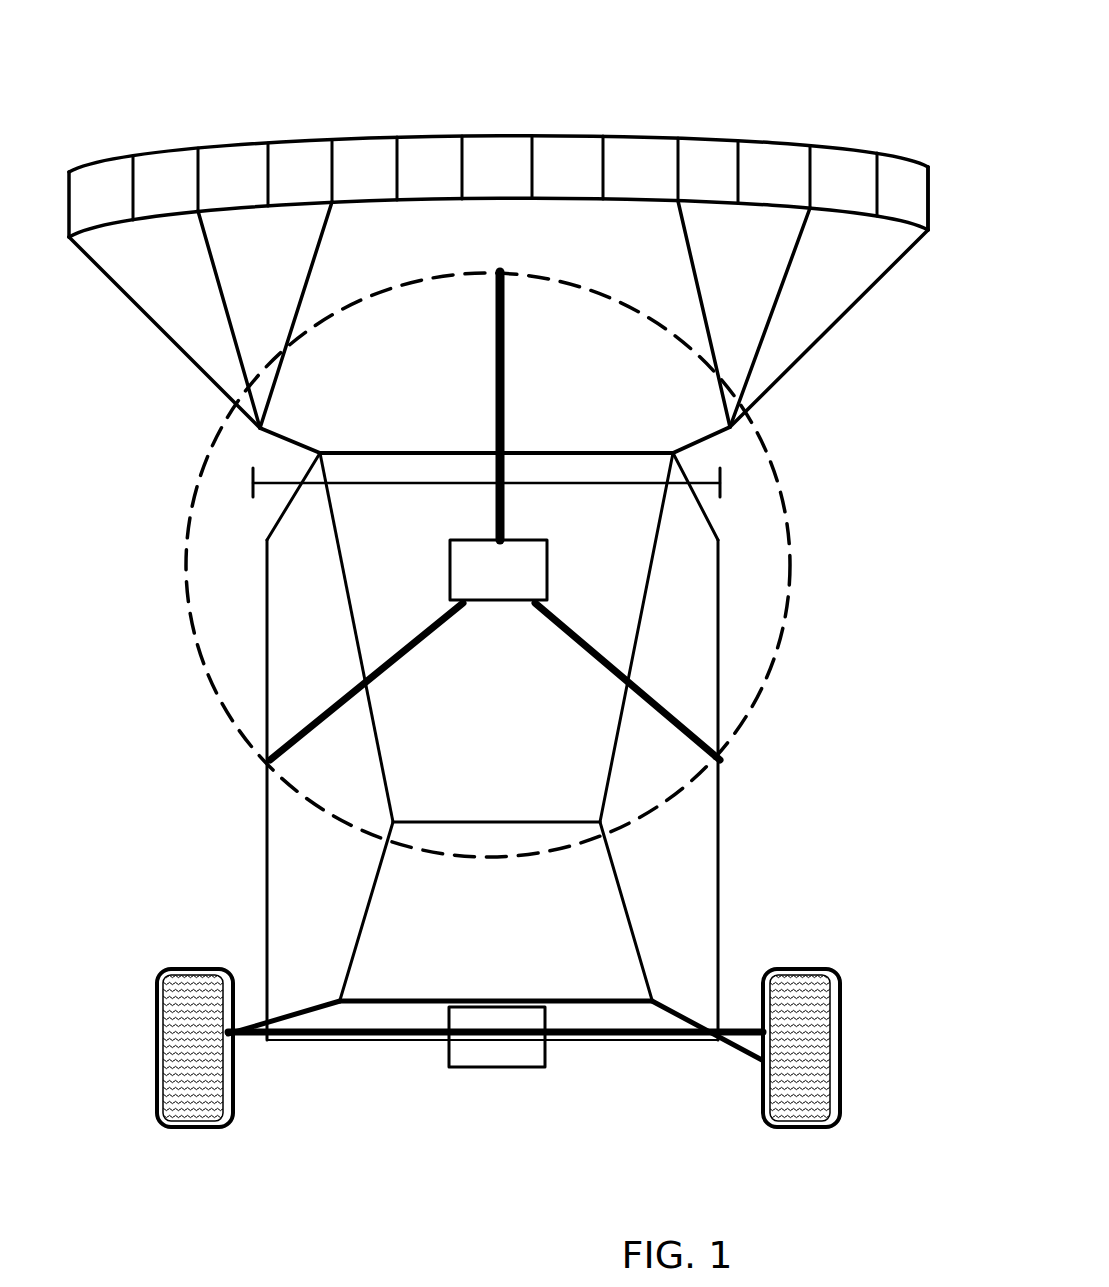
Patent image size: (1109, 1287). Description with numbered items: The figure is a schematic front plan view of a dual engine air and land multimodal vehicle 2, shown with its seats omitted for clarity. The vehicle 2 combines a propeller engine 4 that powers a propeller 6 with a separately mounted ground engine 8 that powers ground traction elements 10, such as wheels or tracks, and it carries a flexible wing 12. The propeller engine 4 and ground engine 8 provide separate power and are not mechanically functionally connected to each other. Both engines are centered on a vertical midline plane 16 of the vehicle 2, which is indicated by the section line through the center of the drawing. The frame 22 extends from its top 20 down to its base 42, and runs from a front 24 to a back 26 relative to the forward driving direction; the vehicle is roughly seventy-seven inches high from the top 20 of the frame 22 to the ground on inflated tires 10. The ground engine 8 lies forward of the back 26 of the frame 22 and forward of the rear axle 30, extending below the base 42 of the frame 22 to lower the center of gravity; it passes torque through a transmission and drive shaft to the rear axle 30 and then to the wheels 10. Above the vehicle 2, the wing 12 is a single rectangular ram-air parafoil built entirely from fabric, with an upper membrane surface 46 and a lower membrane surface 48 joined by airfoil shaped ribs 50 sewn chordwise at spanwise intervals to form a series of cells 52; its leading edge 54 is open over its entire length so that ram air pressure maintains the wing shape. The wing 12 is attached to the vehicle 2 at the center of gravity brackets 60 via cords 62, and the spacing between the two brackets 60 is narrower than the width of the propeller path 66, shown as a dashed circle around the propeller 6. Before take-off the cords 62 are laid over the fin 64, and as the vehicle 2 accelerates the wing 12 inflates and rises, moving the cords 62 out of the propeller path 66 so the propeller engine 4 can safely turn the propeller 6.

The multimodal vehicle 2 is at (838, 657).
The propeller engine 4 is at (447, 573).
The propeller 6 is at (493, 378).
The ground engine 8 is at (483, 1072).
The ground traction elements 10 is at (838, 1083).
The flexible wing 12 is at (260, 138).
The midline plane 16 is at (498, 108).
The top of the frame 20 is at (580, 452).
The frame 22 is at (337, 562).
The front of the frame 24 is at (360, 932).
The back of the frame 26 is at (720, 795).
The rear axle 30 is at (743, 1027).
The base of the frame 42 is at (595, 1045).
The upper membrane surface 46 is at (838, 148).
The lower membrane surface 48 is at (857, 217).
The airfoil shaped ribs 50 is at (538, 176).
The cells 52 is at (767, 160).
The leading edge 54 is at (930, 197).
The center of gravity bracket 60 is at (263, 430).
The cords 62 is at (767, 337).
The fin 64 is at (366, 480).
The propeller path 66 is at (192, 497).